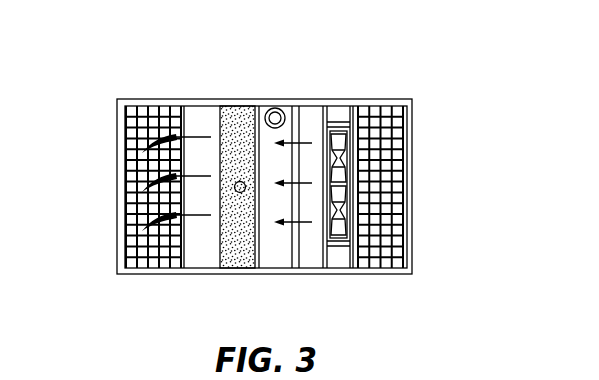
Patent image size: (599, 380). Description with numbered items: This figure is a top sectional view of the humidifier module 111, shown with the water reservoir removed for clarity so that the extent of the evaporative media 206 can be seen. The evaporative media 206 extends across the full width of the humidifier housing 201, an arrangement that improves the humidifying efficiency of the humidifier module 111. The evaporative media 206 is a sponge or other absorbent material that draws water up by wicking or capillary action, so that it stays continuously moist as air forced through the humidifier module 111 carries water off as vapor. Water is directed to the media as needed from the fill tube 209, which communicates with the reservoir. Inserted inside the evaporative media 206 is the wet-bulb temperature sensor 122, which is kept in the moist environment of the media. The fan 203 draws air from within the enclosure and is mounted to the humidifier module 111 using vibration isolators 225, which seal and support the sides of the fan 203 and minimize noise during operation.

The humidifier module 111 is at (463, 152).
The wet-bulb temperature sensor 122 is at (239, 182).
The humidifier housing 201 is at (118, 138).
The fan 203 is at (323, 131).
The evaporative media 206 is at (243, 267).
The fill tube 209 is at (272, 108).
The vibration isolators 225 is at (338, 110).